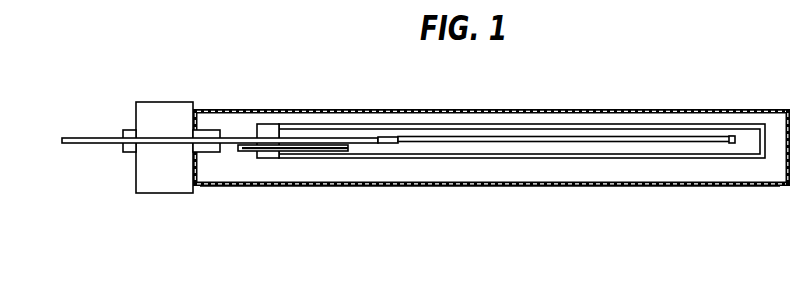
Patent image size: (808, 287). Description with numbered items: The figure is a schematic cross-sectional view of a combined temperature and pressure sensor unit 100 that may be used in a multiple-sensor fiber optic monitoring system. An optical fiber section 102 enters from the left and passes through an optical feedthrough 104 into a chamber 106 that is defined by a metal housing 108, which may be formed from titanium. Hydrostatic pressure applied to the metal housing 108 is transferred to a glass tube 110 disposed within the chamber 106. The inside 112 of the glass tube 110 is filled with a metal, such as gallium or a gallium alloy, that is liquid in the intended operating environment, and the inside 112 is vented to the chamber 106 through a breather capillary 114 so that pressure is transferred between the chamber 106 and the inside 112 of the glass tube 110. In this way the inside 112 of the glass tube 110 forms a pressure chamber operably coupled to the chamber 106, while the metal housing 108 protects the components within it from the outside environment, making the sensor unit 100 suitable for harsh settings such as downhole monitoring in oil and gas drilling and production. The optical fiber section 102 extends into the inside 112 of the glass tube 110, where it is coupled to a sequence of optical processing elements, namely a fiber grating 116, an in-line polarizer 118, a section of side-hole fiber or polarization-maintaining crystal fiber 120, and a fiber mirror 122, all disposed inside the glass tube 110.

The sensor unit 100 is at (617, 82).
The optical fiber section 102 is at (96, 137).
The optical feedthrough 104 is at (216, 114).
The chamber 106 is at (742, 170).
The metal housing 108 is at (377, 187).
The glass tube 110 is at (575, 160).
The inside of the glass tube 112 is at (645, 148).
The breather capillary 114 is at (251, 152).
The fiber grating 116 is at (322, 132).
The in-line polarizer 118 is at (394, 137).
The section of side-hole fiber or polarization-maintaining crystal fiber 120 is at (527, 136).
The fiber mirror 122 is at (734, 137).